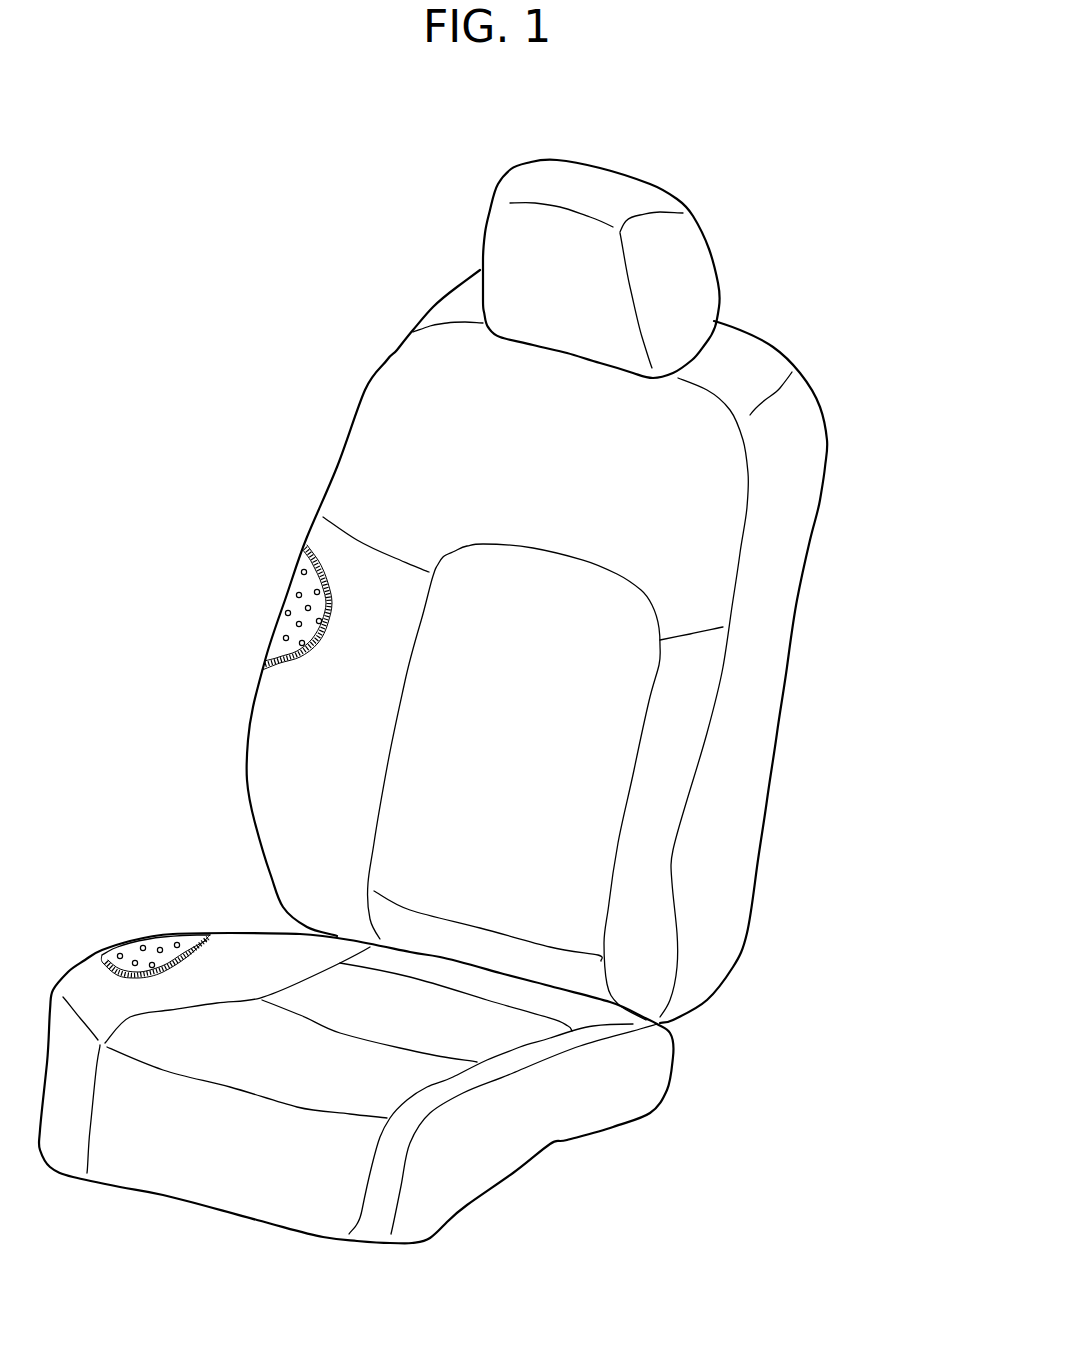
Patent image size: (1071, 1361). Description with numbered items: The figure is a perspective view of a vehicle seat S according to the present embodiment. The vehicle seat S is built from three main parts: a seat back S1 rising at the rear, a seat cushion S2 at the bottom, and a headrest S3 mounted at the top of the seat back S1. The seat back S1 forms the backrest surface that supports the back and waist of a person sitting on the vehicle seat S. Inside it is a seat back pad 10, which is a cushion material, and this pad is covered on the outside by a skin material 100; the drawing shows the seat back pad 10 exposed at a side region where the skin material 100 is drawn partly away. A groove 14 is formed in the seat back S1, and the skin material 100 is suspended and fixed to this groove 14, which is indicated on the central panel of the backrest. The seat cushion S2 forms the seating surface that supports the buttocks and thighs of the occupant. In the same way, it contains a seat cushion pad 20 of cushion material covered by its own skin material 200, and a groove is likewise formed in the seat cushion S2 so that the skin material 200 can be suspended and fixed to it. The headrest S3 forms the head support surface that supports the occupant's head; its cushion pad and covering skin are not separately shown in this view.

The vehicle seat S is at (168, 233).
The seat back S1 is at (842, 527).
The seat cushion S2 is at (621, 1140).
The headrest S3 is at (693, 182).
The groove 14 is at (466, 536).
The seat back pad 10 is at (278, 623).
The skin material 100 is at (316, 556).
The seat cushion pad 20 is at (127, 950).
The skin material 200 is at (193, 933).